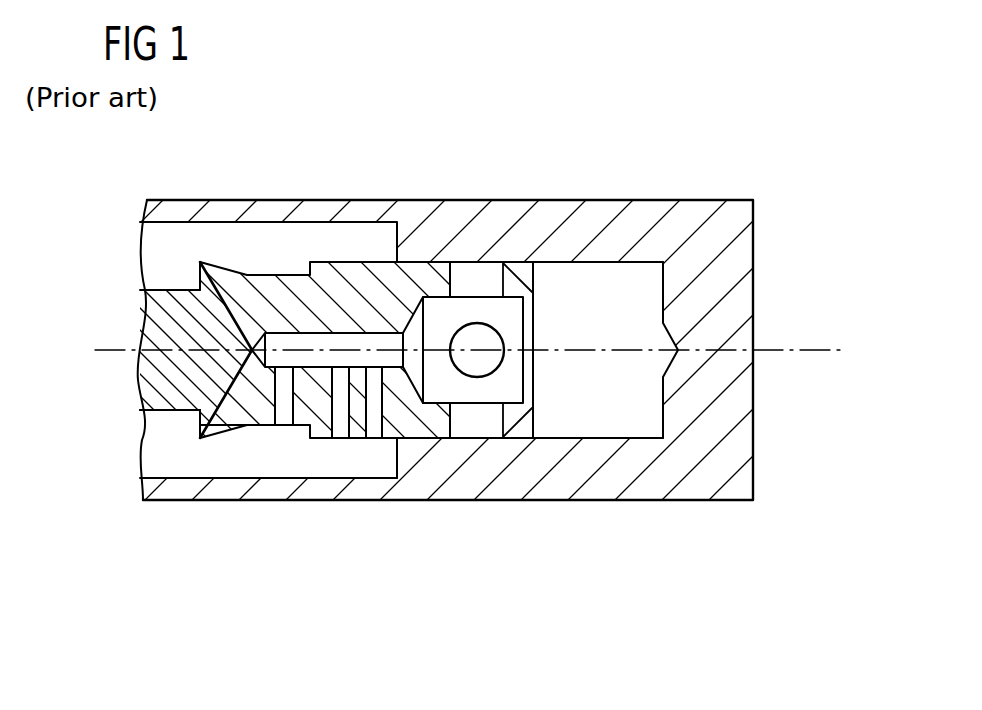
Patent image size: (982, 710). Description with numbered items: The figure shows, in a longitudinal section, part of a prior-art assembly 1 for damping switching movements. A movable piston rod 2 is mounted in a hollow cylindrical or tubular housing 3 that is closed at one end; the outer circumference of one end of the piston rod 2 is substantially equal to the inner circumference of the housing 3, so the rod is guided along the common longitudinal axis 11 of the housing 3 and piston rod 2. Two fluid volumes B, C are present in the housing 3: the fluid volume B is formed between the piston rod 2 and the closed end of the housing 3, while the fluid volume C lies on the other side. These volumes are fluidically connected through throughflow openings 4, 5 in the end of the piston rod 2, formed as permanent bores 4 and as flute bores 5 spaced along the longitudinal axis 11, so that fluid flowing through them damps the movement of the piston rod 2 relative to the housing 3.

The assembly for damping switching movements 1 is at (752, 137).
The piston rod 2 is at (270, 288).
The housing 3 is at (685, 210).
The throughflow openings (permanent bores) 4 is at (285, 413).
The flute bores 5 is at (375, 427).
The fluid volume B is at (583, 298).
The fluid volume C is at (163, 444).
The longitudinal axis 11 is at (826, 350).